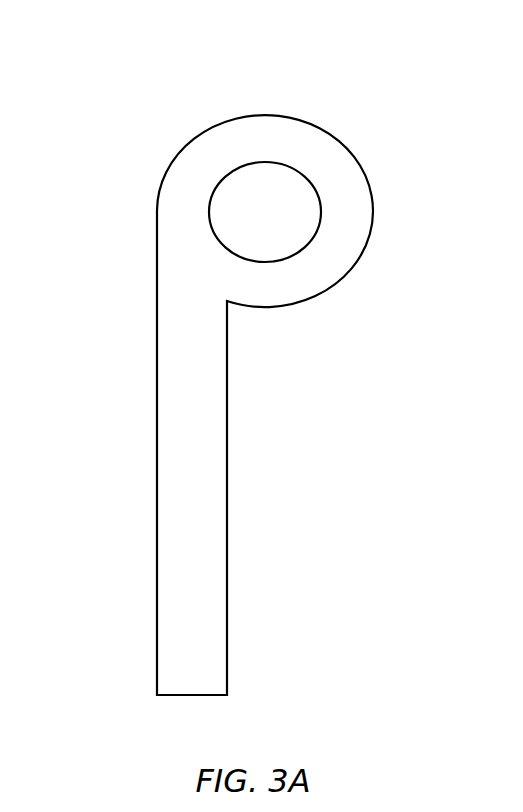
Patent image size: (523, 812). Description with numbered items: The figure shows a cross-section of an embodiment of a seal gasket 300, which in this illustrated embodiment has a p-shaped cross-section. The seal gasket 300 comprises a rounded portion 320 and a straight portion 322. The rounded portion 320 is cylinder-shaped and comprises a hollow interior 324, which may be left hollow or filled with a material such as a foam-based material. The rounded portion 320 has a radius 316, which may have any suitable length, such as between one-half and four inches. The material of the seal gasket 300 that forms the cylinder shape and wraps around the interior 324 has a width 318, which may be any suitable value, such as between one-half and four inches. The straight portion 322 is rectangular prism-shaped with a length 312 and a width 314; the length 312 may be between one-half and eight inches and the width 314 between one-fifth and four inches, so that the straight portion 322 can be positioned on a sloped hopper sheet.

The seal gasket 300 is at (112, 24).
The length 312 is at (145, 211).
The width 314 is at (150, 708).
The radius 316 is at (157, 200).
The width 318 is at (320, 200).
The rounded portion 320 is at (385, 115).
The straight portion 322 is at (385, 313).
The hollow interior 324 is at (250, 221).